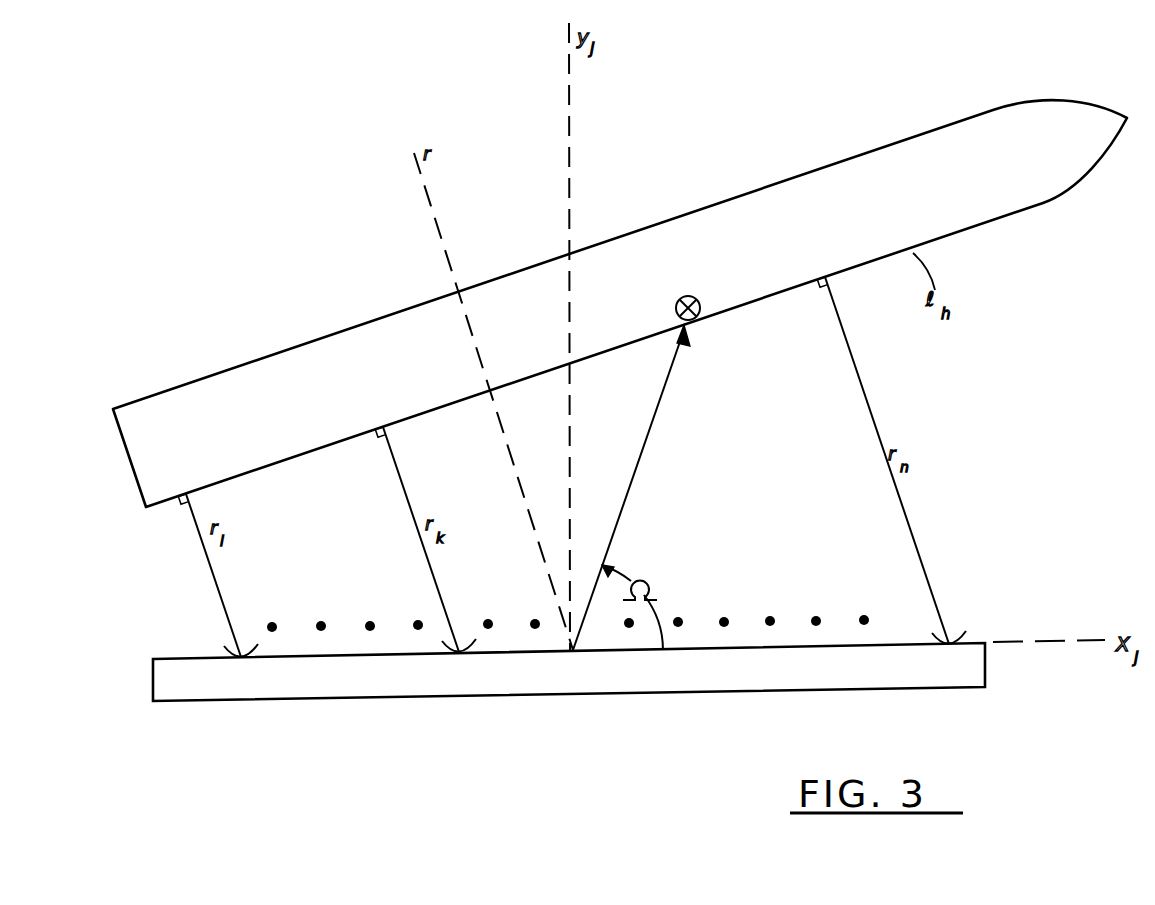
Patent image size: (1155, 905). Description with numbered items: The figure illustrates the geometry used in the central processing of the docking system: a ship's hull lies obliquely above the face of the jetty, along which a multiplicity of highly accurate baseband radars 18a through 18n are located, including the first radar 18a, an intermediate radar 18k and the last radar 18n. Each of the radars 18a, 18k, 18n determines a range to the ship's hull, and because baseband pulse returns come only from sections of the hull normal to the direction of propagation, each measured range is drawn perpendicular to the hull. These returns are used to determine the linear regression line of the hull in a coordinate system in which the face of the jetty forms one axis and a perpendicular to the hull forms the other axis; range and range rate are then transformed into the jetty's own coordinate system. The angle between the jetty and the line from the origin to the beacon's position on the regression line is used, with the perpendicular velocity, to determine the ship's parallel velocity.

The baseband radar 18a is at (242, 668).
The baseband radar 18k is at (458, 661).
The baseband radar 18n is at (947, 652).